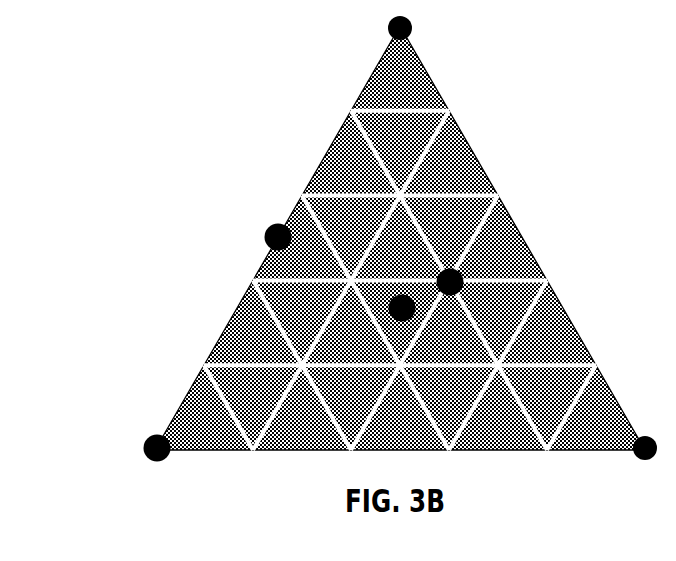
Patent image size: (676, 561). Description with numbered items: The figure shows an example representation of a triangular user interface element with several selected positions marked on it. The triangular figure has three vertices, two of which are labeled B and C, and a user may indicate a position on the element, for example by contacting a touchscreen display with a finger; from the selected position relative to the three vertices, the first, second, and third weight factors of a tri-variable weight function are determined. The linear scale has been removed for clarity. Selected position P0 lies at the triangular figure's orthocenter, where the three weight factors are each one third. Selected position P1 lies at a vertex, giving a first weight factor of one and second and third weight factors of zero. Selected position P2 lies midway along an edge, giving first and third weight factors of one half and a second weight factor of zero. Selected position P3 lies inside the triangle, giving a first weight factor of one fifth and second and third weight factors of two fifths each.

The vertex C of ternary composition diagram C is at (400, 28).
The vertex B of ternary composition diagram B is at (645, 448).
The selected position P0 is at (382, 326).
The selected position P1 is at (181, 463).
The selected position P2 is at (302, 254).
The selected position P3 is at (469, 264).